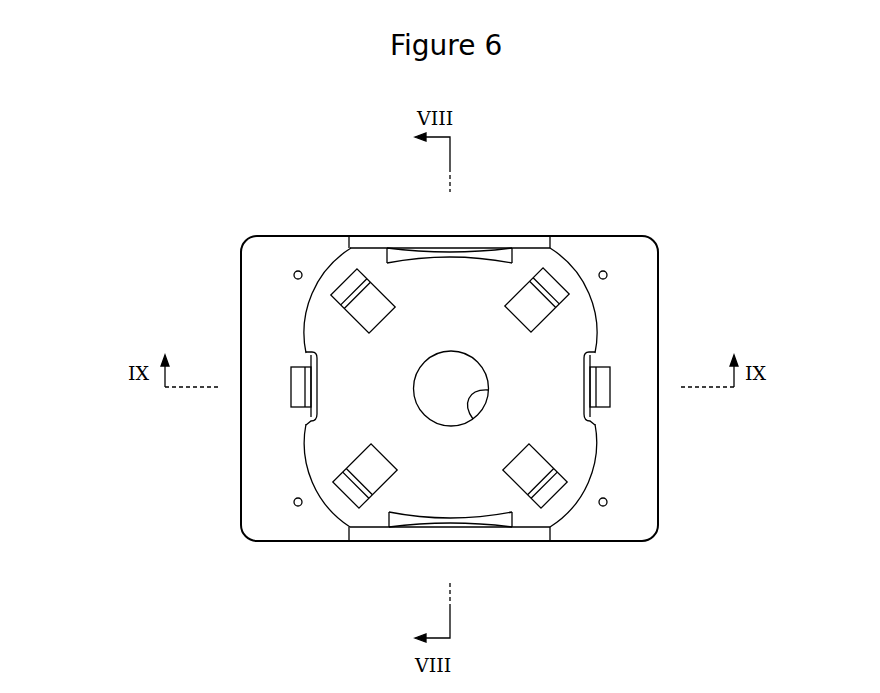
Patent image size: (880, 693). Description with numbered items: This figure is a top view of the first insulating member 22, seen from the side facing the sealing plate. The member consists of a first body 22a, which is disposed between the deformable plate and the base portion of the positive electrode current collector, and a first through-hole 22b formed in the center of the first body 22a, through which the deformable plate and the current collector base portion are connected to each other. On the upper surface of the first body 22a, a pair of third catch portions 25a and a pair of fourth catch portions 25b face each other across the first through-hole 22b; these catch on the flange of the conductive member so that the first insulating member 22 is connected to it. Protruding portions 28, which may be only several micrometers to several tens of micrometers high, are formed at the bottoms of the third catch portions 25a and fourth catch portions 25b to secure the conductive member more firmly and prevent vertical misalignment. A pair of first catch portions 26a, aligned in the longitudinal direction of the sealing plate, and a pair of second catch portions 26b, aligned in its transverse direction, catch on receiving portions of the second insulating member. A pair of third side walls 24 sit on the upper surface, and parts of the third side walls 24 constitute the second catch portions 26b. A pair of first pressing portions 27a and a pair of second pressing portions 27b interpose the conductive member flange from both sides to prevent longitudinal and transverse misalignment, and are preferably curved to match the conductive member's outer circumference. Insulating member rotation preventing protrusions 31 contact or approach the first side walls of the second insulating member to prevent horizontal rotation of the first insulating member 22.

The first insulating member 22 is at (530, 105).
The first body 22a is at (350, 286).
The first through-hole 22b is at (473, 419).
The third side walls 24 is at (415, 305).
The third catch portions 25a is at (346, 287).
The fourth catch portions 25b is at (560, 291).
The first catch portions 26a is at (295, 375).
The second catch portions 26b is at (447, 250).
The first pressing portions 27a is at (307, 415).
The second pressing portions 27b is at (483, 252).
The protruding portions 28 is at (368, 317).
The insulating member rotation preventing protrusions 31 is at (294, 273).